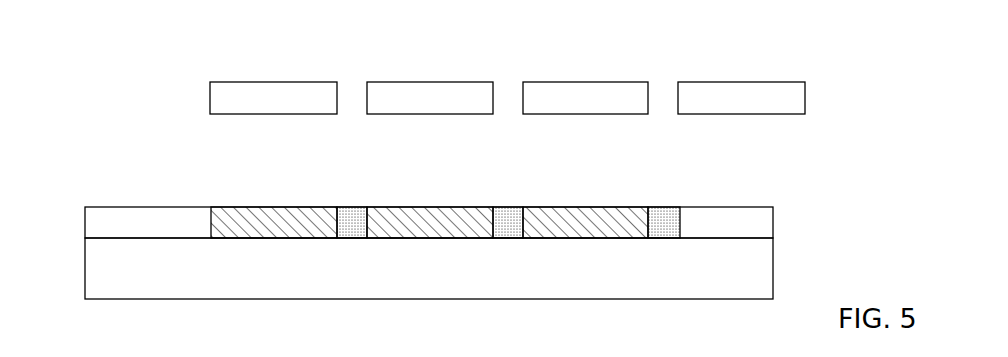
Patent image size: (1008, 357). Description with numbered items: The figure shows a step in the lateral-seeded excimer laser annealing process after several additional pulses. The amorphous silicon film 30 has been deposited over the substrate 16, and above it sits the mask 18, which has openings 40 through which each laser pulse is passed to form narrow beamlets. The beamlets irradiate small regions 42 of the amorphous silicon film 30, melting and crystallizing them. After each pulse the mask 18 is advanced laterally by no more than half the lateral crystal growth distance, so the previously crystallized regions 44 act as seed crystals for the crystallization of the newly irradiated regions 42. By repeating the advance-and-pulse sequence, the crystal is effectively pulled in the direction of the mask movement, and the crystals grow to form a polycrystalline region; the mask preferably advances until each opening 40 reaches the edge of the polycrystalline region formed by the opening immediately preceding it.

The substrate 16 is at (752, 268).
The mask 18 is at (780, 89).
The amorphous silicon film 30 is at (748, 215).
The openings 40 is at (353, 74).
The irradiated regions 42 is at (346, 215).
The previously crystallized regions 44 is at (252, 215).